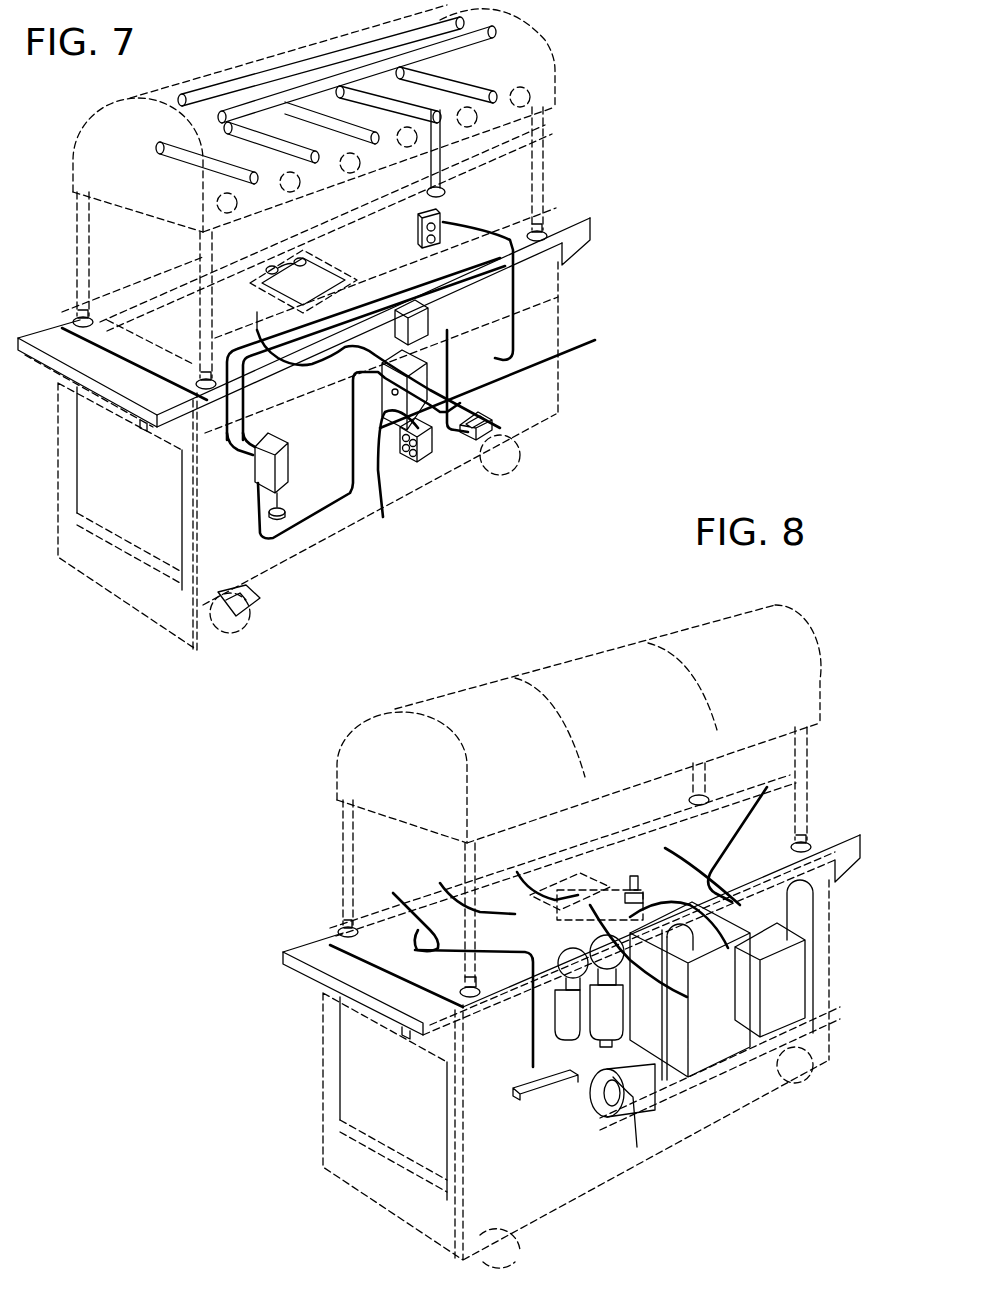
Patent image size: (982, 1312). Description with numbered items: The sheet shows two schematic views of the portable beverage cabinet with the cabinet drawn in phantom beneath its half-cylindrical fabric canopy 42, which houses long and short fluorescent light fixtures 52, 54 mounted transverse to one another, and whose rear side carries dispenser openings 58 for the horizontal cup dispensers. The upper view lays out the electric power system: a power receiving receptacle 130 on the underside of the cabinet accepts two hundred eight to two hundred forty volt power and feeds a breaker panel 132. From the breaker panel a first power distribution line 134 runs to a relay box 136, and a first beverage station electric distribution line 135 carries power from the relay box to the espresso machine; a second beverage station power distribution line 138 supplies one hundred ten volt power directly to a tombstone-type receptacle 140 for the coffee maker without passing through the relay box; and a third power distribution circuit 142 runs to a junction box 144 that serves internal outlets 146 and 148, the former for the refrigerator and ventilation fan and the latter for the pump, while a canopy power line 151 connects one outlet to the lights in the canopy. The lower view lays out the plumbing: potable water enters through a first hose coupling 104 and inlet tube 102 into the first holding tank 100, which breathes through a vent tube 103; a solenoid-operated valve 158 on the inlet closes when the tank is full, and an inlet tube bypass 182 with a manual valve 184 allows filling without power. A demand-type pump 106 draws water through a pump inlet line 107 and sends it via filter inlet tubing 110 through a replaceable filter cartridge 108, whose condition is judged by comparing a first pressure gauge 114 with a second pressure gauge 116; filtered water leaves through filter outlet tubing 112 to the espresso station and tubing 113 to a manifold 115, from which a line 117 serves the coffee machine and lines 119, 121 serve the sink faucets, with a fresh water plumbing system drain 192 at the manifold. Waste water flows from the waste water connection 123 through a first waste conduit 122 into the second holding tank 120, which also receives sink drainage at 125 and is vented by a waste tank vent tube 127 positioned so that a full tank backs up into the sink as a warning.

In FIG. 7, the canopy 42 is at (547, 33).
In FIG. 8, the canopy 42 is at (760, 633).
In FIG. 7, the light fixture 52 is at (330, 62).
In FIG. 7, the light fixture 54 is at (413, 98).
In FIG. 7, the dispenser openings 58 is at (405, 147).
In FIG. 7, the power receiving receptacle 130 is at (286, 510).
In FIG. 7, the breaker panel 132 is at (287, 462).
In FIG. 7, the first power distribution line 134 is at (315, 517).
In FIG. 7, the first beverage station electric distribution line 135 is at (257, 327).
In FIG. 7, the relay box 136 is at (393, 450).
In FIG. 7, the second beverage station power distribution line 138 is at (430, 262).
In FIG. 7, the receptacle 140 is at (447, 224).
In FIG. 7, the third power distribution circuit 142 is at (243, 377).
In FIG. 7, the junction box 144 is at (398, 322).
In FIG. 7, the outlet 146 is at (478, 422).
In FIG. 7, the outlet 148 is at (433, 442).
In FIG. 7, the canopy power line 151 is at (505, 378).
In FIG. 8, the first holding tank 100 is at (720, 1053).
In FIG. 8, the inlet tube 102 is at (539, 873).
In FIG. 8, the vent tube 103 is at (667, 1027).
In FIG. 8, the first hose coupling 104 is at (474, 964).
In FIG. 8, the pump 106 is at (707, 1067).
In FIG. 8, the pump inlet line 107 is at (632, 1139).
In FIG. 8, the filter cartridge 108 is at (540, 1040).
In FIG. 8, the filter inlet tubing 110 is at (647, 1097).
In FIG. 8, the filter outlet tubing 112 is at (690, 997).
In FIG. 8, the filter outlet tubing 113 is at (523, 1083).
In FIG. 8, the first pressure gauge 114 is at (575, 952).
In FIG. 8, the manifold 115 is at (523, 1102).
In FIG. 8, the second pressure gauge 116 is at (603, 943).
In FIG. 8, the line 117 is at (405, 910).
In FIG. 8, the line 119 is at (553, 1097).
In FIG. 8, the second holding tank 120 is at (787, 1013).
In FIG. 8, the line 121 is at (560, 1097).
In FIG. 8, the first waste conduit 122 is at (748, 831).
In FIG. 8, the waste water connection 123 is at (665, 848).
In FIG. 8, the sink waste conduit connection 125 is at (767, 947).
In FIG. 8, the waste tank vent tube 127 is at (827, 915).
In FIG. 8, the solenoid-operated valve 158 is at (590, 888).
In FIG. 8, the inlet tube bypass 182 is at (706, 952).
In FIG. 8, the manual valve 184 is at (633, 875).
In FIG. 8, the fresh water plumbing system drain 192 is at (575, 1077).